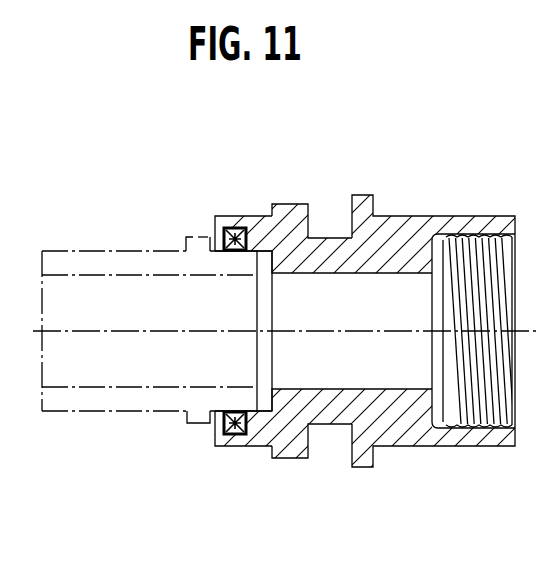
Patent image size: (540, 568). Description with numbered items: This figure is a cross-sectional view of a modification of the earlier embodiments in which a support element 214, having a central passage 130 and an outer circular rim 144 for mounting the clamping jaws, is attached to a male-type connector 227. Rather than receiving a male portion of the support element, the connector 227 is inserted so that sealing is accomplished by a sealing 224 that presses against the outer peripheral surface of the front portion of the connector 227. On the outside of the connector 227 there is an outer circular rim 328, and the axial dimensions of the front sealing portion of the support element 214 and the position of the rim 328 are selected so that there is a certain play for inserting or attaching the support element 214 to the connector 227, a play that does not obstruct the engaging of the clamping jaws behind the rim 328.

The central passage 130 is at (405, 363).
The circular rim 144 is at (305, 460).
The support element 214 is at (400, 216).
The sealing 224 is at (233, 435).
The connector 227 is at (113, 399).
The outer circular rim 328 is at (192, 236).